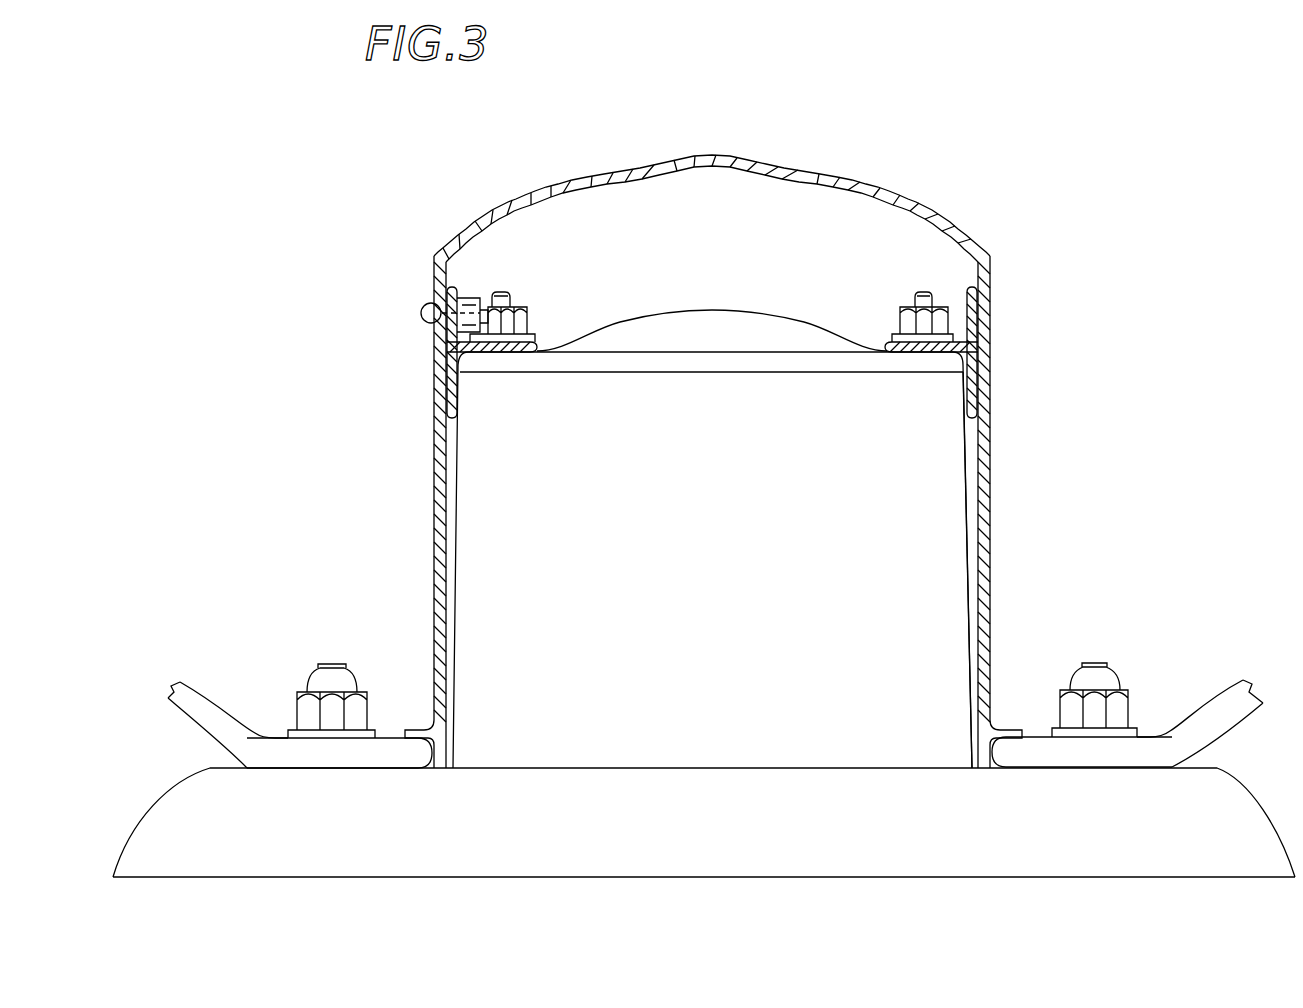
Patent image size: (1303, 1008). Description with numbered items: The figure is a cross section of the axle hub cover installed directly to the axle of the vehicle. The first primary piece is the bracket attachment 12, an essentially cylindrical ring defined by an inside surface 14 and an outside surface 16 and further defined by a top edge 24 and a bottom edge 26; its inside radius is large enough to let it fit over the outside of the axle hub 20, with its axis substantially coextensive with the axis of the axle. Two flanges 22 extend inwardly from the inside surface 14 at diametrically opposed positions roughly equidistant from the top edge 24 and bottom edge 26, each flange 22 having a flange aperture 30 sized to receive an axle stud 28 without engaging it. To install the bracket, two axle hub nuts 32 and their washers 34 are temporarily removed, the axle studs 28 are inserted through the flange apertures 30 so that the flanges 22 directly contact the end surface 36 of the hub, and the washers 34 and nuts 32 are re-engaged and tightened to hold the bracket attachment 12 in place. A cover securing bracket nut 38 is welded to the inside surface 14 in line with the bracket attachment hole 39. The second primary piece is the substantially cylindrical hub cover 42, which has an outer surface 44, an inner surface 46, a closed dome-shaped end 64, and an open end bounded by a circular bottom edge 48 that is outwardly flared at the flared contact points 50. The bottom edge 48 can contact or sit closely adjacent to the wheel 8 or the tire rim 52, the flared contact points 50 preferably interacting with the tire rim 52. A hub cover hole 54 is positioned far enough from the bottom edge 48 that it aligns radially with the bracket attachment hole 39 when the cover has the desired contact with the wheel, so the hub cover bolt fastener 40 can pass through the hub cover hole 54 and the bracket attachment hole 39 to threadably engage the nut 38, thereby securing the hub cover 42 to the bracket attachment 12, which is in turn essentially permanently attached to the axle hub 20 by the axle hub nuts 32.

The wheel 8 is at (680, 857).
The bracket attachment 12 is at (1011, 512).
The inside surface 14 is at (446, 400).
The outside surface 16 is at (413, 361).
The axle hub 20 is at (754, 560).
The flange 22 is at (712, 316).
The top edge 24 is at (453, 290).
The bottom edge 26 is at (413, 361).
The axle stud 28 is at (711, 284).
The flange aperture 30 is at (670, 381).
The axle hub nut 32 is at (520, 319).
The washer 34 is at (530, 330).
The end surface 36 is at (732, 313).
The cover securing bracket nut 38 is at (450, 353).
The bracket attachment hole 39 is at (442, 330).
The hub cover bolt fastener 40 is at (430, 306).
The hub cover 42 is at (706, 187).
The outer surface 44 is at (1015, 500).
The inner surface 46 is at (978, 495).
The bottom edge 48 is at (433, 745).
The flared contact points 50 is at (418, 730).
The tire rim 52 is at (276, 736).
The hub cover hole 54 is at (457, 297).
The dome-shaped end 64 is at (815, 172).